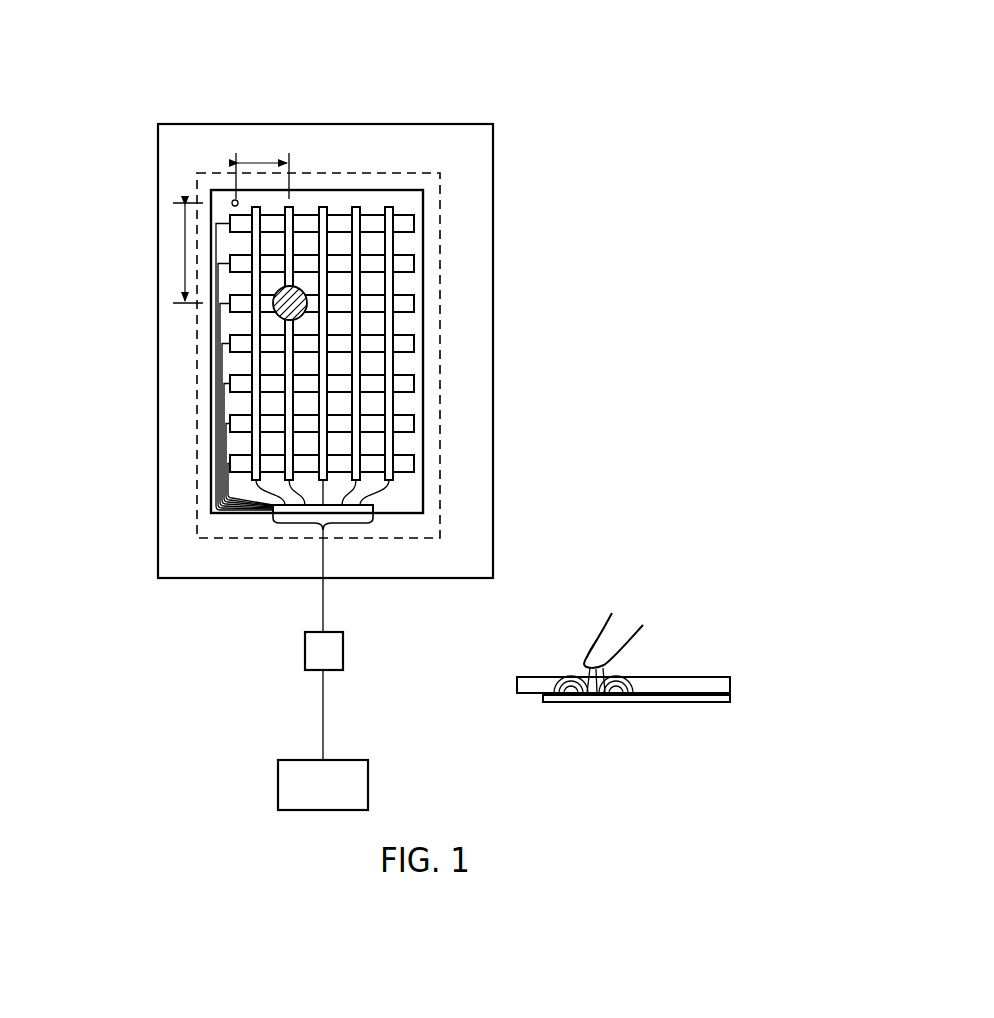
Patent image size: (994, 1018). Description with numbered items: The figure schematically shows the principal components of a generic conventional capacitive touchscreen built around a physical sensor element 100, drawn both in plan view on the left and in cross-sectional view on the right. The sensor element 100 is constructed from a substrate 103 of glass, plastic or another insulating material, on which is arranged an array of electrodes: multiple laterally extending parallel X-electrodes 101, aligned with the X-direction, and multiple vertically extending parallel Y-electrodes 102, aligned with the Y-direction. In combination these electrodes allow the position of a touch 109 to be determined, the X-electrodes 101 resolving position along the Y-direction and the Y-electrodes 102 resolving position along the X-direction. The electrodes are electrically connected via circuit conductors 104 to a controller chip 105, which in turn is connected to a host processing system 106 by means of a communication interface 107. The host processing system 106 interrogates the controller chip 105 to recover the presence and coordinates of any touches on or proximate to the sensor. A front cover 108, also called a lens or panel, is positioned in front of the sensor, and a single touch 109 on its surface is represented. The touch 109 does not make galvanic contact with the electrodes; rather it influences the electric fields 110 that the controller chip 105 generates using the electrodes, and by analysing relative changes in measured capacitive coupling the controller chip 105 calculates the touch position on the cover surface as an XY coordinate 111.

The physical sensor element 100 is at (440, 320).
The X-electrodes 101 is at (414, 222).
The Y-electrodes 102 is at (327, 207).
The substrate 103 is at (424, 467).
The circuit conductors 104 is at (320, 607).
The controller chip 105 is at (305, 652).
The host processing system 106 is at (278, 790).
The communication interface 107 is at (323, 710).
The front cover 108 is at (472, 124).
The touch 109 is at (275, 315).
The electric fields 110 is at (560, 683).
The XY coordinate 111 is at (253, 142).